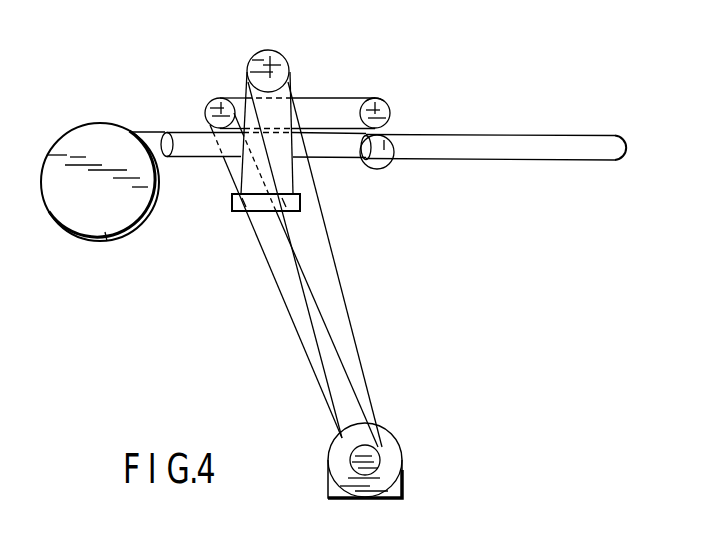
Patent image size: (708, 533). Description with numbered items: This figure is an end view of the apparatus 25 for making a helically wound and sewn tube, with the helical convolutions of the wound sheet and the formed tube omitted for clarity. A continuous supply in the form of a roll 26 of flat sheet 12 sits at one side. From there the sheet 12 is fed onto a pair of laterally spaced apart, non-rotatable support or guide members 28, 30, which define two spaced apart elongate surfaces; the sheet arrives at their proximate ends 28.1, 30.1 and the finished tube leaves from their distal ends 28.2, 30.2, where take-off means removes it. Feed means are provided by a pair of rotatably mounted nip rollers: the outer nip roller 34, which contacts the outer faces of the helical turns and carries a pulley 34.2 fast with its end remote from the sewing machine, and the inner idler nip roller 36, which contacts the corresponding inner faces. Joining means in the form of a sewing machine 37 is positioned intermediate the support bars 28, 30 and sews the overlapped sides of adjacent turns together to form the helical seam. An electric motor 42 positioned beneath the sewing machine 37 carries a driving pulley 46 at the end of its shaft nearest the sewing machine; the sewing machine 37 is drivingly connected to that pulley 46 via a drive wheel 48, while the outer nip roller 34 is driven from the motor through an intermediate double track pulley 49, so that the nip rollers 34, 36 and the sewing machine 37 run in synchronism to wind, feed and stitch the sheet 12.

The sheet 12 is at (148, 131).
The apparatus 25 is at (501, 183).
The roll 26 is at (103, 232).
The support or guide member 28 is at (517, 147).
The proximate end 28.1 is at (386, 150).
The distal end 28.2 is at (583, 152).
The support or guide member 30 is at (187, 132).
The proximate end 30.1 is at (182, 147).
The distal end 30.2 is at (372, 160).
The outer nip roller 34 is at (389, 120).
The pulley 34.2 is at (372, 97).
The inner idler nip roller 36 is at (388, 160).
The sewing machine 37 is at (306, 160).
The electric motor 42 is at (404, 488).
The driving pulley 46 is at (388, 440).
The drive wheel 48 is at (268, 50).
The intermediate double track pulley 49 is at (218, 98).